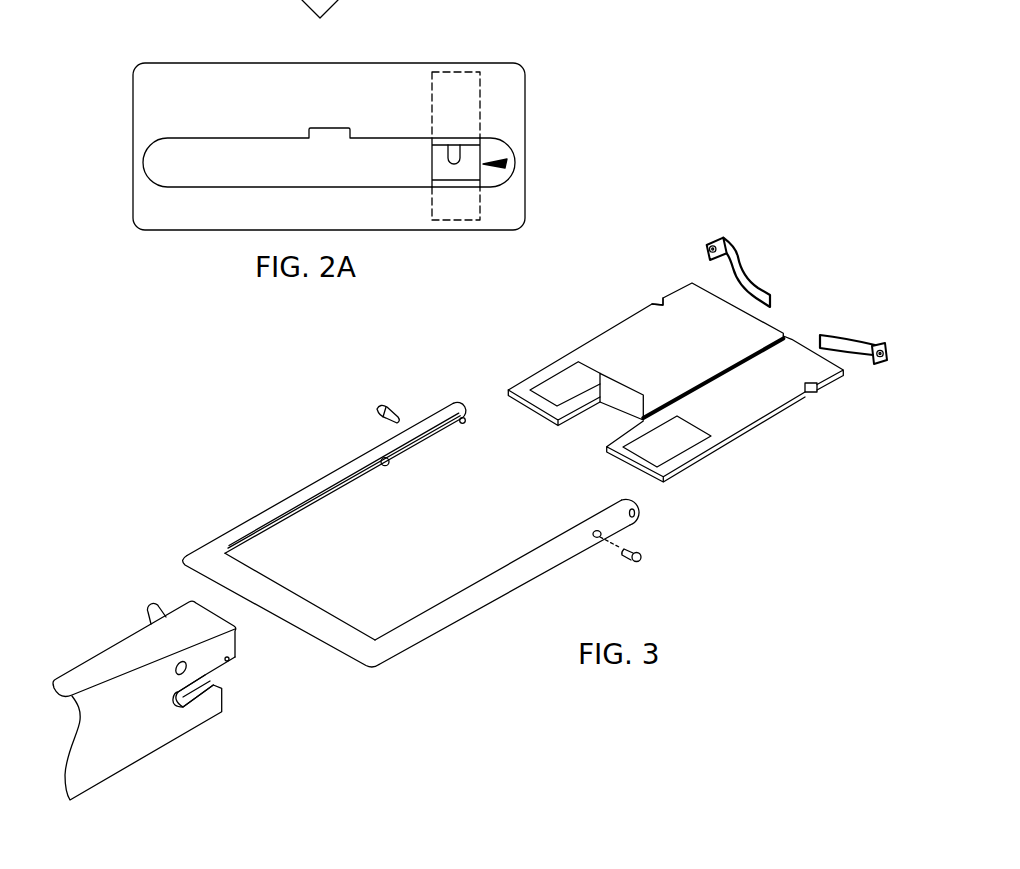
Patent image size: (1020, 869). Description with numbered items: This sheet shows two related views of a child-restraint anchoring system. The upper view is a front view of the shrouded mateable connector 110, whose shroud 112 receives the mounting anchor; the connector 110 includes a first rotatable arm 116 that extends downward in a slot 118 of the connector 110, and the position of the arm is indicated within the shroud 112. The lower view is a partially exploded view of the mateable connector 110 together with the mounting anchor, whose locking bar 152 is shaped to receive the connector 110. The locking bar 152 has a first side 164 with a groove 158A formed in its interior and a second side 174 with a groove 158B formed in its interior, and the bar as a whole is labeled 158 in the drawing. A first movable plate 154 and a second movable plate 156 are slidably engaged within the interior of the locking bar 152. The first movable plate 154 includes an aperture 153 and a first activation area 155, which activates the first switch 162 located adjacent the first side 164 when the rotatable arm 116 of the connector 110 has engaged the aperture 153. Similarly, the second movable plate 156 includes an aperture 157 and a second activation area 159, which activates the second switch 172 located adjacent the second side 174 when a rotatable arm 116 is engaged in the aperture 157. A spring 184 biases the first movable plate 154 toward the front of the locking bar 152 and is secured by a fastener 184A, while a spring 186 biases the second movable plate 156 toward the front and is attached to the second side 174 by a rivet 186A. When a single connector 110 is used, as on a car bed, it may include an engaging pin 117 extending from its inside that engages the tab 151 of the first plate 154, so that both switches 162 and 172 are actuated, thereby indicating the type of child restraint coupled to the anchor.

In FIG. 2A, the mateable connector 110 is at (480, 107).
In FIG. 3, the mateable connector 110 is at (177, 682).
In FIG. 2A, the shroud 112 is at (235, 62).
In FIG. 2A, the first rotatable arm 116 is at (445, 158).
In FIG. 3, the first rotatable arm 116 is at (229, 660).
In FIG. 3, the engaging pin 117 is at (157, 607).
In FIG. 2A, the slot 118 is at (506, 164).
In FIG. 3, the slot 118 is at (240, 681).
In FIG. 3, the tab 151 is at (679, 356).
In FIG. 3, the locking bar 152 is at (345, 654).
In FIG. 3, the aperture 153 is at (567, 387).
In FIG. 3, the first movable plate 154 is at (627, 336).
In FIG. 3, the first activation area 155 is at (653, 276).
In FIG. 3, the second movable plate 156 is at (765, 368).
In FIG. 3, the aperture 157 is at (678, 437).
In FIG. 3, the frame 158 is at (411, 564).
In FIG. 3, the groove 158A is at (352, 504).
In FIG. 3, the groove 158B is at (502, 606).
In FIG. 3, the second activation area 159 is at (817, 405).
In FIG. 3, the first switch 162 is at (383, 458).
In FIG. 3, the first side 164 is at (286, 476).
In FIG. 3, the second switch 172 is at (532, 548).
In FIG. 3, the second side 174 is at (493, 628).
In FIG. 3, the spring 184 is at (743, 270).
In FIG. 3, the screw 184A is at (380, 406).
In FIG. 3, the spring 186 is at (824, 332).
In FIG. 3, the rivet 186A is at (641, 558).